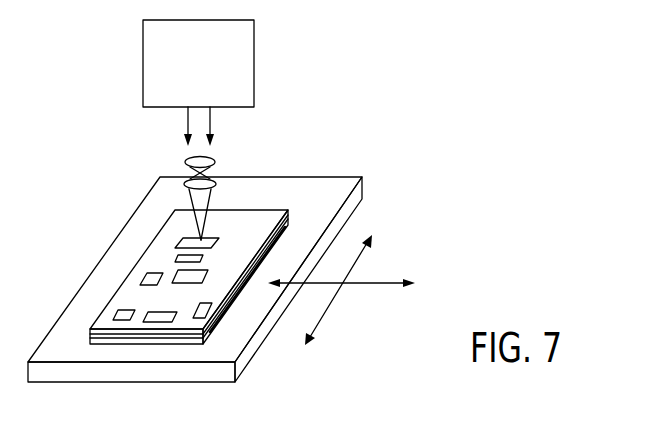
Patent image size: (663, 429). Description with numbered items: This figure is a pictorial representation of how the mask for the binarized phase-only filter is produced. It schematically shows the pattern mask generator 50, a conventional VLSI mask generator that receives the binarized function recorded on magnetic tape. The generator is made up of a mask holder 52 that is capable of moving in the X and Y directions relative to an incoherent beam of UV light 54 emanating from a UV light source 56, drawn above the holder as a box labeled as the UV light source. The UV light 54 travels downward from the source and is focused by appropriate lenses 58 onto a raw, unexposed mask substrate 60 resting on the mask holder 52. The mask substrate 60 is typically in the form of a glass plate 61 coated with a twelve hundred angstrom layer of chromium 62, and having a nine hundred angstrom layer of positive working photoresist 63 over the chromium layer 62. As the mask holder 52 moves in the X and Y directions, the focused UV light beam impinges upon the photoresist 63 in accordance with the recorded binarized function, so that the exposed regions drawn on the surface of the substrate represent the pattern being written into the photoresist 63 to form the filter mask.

The pattern mask generator 50 is at (330, 124).
The mask holder 52 is at (317, 227).
The beam of UV light 54 is at (203, 122).
The UV light source 56 is at (247, 40).
The lenses 58 is at (217, 185).
The mask substrate 60 is at (259, 221).
The glass plate 61 is at (217, 324).
The layer of chromium 62 is at (125, 336).
The photoresist 63 is at (128, 292).